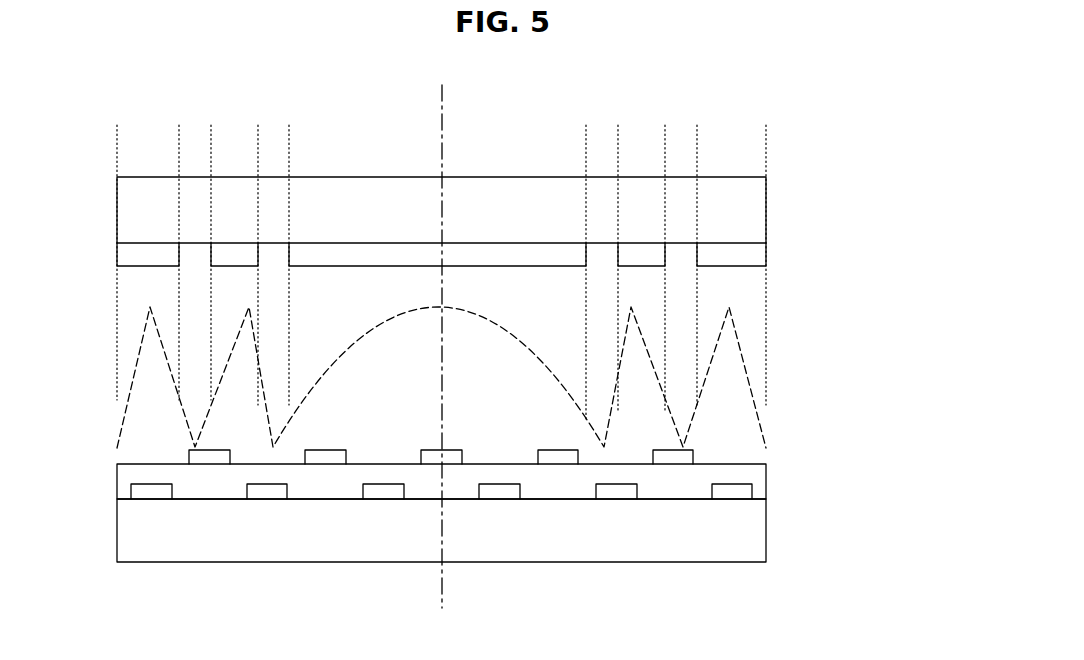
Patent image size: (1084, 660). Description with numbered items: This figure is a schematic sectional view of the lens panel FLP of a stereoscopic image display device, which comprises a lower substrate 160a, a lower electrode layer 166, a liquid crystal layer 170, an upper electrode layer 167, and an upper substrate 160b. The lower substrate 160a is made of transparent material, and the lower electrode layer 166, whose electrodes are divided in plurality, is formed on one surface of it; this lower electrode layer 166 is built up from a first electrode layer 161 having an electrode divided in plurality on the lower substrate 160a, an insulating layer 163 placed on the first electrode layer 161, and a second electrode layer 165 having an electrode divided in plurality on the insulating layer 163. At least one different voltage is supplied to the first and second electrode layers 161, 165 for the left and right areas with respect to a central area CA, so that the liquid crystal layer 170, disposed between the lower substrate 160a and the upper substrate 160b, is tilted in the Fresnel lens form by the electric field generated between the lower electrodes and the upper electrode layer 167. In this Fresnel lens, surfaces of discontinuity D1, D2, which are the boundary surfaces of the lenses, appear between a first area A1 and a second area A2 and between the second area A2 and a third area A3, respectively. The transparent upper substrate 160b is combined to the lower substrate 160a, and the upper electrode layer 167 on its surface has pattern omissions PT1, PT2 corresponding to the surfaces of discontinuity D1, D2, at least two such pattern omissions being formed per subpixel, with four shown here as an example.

The lower substrate 160a is at (483, 530).
The upper substrate 160b is at (755, 209).
The first electrode layer 161 is at (743, 493).
The insulating layer 163 is at (755, 476).
The second electrode layer 165 is at (690, 460).
The lower electrode layer 166 is at (503, 479).
The upper electrode layer 167 is at (755, 253).
The liquid crystal layer 170 is at (748, 377).
The lens panel FLP is at (502, 369).
The central area CA is at (442, 334).
The pattern omission PT1 is at (274, 254).
The pattern omission PT2 is at (190, 253).
The first area A1 is at (766, 142).
The second area A2 is at (438, 127).
The third area A3 is at (440, 127).
The surface of discontinuity D1 is at (438, 127).
The surface of discontinuity D2 is at (438, 127).